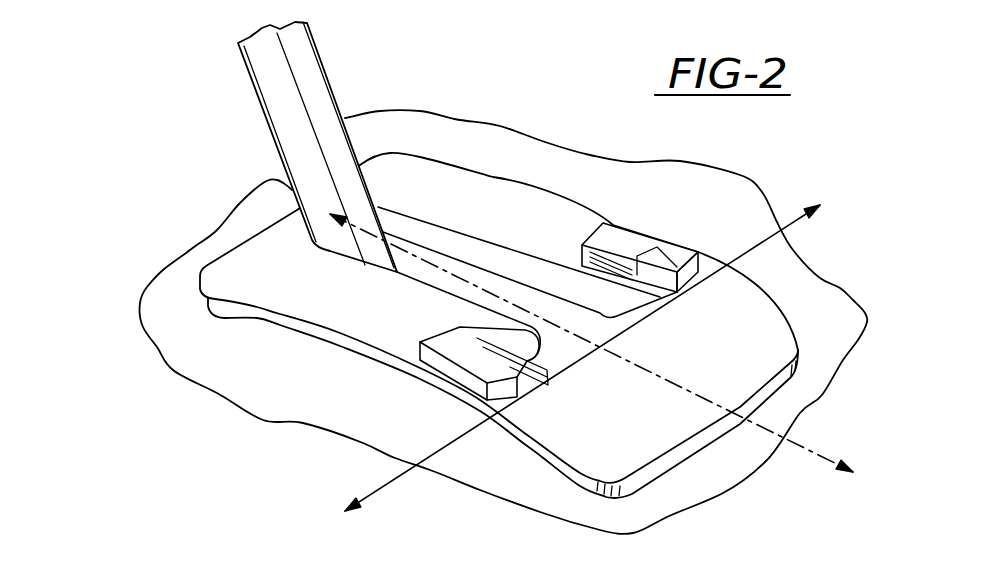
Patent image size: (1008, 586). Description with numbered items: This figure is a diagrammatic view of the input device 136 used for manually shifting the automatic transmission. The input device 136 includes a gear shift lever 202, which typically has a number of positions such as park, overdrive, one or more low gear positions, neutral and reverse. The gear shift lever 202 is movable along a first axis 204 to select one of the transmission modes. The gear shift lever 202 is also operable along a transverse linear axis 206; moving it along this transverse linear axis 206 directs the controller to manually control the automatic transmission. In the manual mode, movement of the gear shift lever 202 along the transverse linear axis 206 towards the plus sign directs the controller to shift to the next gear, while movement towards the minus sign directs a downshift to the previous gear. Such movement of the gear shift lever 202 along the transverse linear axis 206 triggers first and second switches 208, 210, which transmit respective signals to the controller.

The input device 136 is at (258, 430).
The gear shift lever 202 is at (319, 78).
The first axis 204 is at (768, 437).
The transverse linear axis 206 is at (786, 200).
The first switch 208 is at (650, 240).
The second switch 210 is at (470, 362).